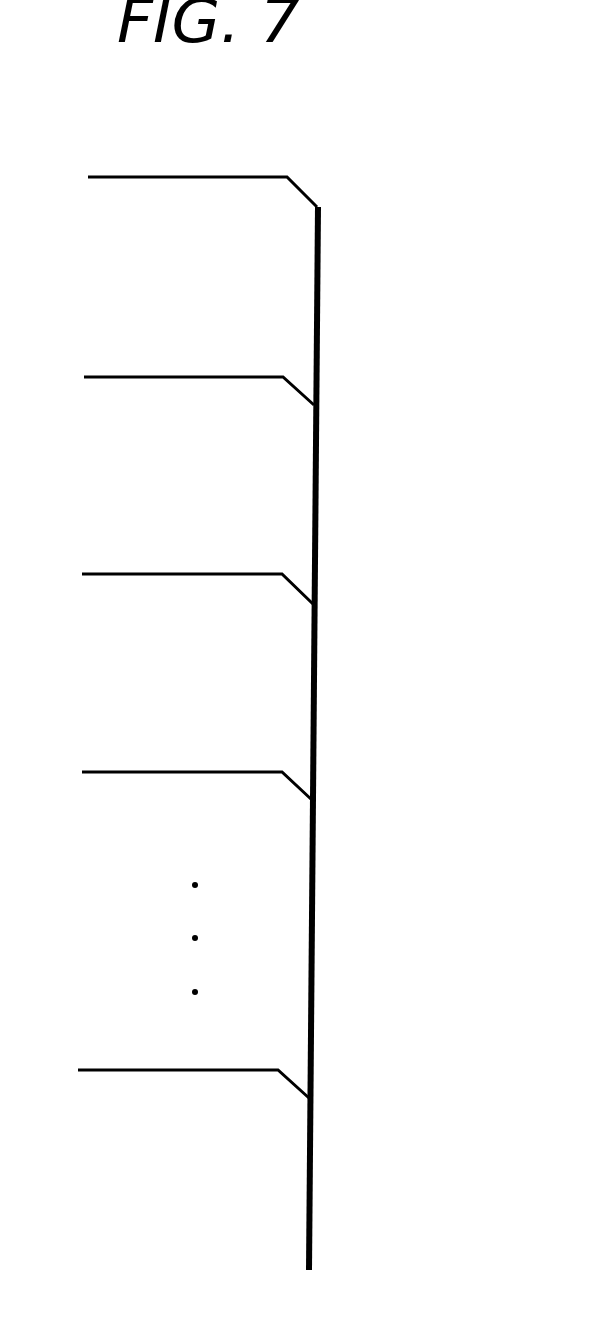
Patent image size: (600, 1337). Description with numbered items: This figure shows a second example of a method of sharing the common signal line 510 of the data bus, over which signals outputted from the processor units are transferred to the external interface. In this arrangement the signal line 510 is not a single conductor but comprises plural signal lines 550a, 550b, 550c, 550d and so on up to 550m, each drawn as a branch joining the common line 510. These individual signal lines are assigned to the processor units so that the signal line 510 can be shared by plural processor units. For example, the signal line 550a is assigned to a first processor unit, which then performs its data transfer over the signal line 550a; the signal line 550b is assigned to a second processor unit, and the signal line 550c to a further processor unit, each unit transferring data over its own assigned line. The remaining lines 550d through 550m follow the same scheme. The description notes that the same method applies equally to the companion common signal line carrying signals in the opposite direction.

The common signal line 510 is at (321, 463).
The signal line 550a is at (140, 176).
The signal line 550b is at (140, 376).
The signal line 550c is at (140, 573).
The signal line 550d is at (138, 771).
The signal line 550m is at (136, 1069).